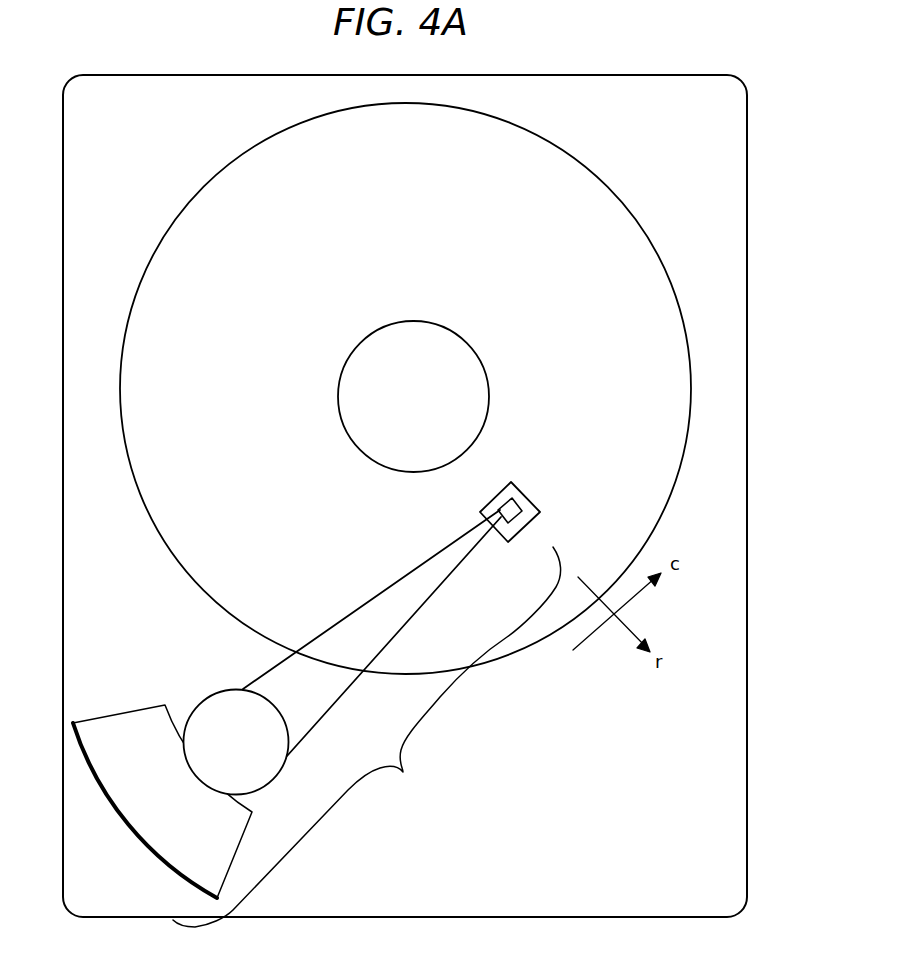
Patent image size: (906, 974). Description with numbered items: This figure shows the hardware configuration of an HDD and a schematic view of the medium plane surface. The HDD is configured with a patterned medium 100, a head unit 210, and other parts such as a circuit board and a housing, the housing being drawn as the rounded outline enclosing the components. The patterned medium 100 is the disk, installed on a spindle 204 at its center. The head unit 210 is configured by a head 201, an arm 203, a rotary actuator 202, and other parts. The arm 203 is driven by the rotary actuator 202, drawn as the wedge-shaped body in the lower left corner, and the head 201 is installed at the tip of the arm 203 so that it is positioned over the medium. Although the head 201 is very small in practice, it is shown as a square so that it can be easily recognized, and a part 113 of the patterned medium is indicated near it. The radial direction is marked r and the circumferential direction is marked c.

The patterned medium 100 is at (613, 235).
The part of patterned medium 113 is at (540, 513).
The head 201 is at (514, 498).
The rotary actuator 202 is at (210, 715).
The arm 203 is at (267, 677).
The spindle 204 is at (358, 390).
The head unit 210 is at (367, 737).